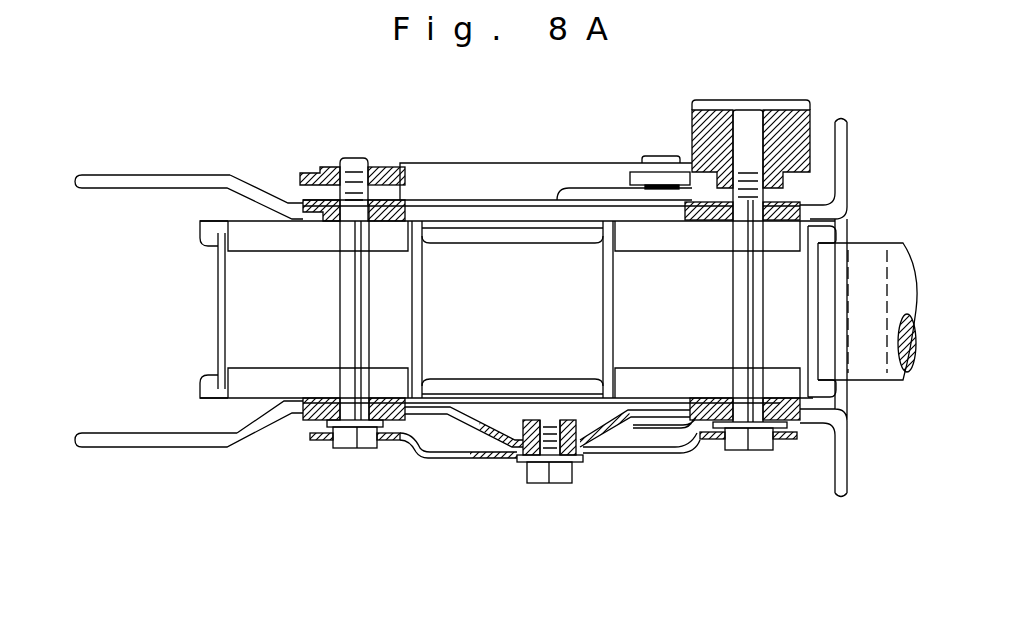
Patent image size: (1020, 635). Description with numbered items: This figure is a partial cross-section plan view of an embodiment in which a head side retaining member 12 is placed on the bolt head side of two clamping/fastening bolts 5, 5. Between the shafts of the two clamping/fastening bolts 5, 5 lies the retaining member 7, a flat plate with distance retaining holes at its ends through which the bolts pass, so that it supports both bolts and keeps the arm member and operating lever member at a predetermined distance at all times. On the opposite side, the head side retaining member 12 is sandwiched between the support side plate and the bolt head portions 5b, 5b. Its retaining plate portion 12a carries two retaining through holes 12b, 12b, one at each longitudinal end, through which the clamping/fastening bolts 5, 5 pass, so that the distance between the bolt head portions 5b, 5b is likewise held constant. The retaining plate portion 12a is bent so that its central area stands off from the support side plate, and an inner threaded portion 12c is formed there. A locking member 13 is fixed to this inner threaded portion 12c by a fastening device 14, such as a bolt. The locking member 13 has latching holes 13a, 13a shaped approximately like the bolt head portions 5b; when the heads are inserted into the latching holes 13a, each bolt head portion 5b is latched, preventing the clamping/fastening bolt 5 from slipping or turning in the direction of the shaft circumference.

The retaining member 7 is at (468, 190).
The clamping/fastening bolt 5 is at (383, 313).
The bolt head portion 5b is at (345, 449).
The head side retaining member 12 is at (642, 436).
The retaining plate portion 12a is at (480, 417).
The retaining through hole 12b is at (340, 418).
The inner threaded portion 12c is at (546, 413).
The locking member 13 is at (480, 467).
The latching hole 13a is at (382, 441).
The fastening device 14 is at (557, 481).